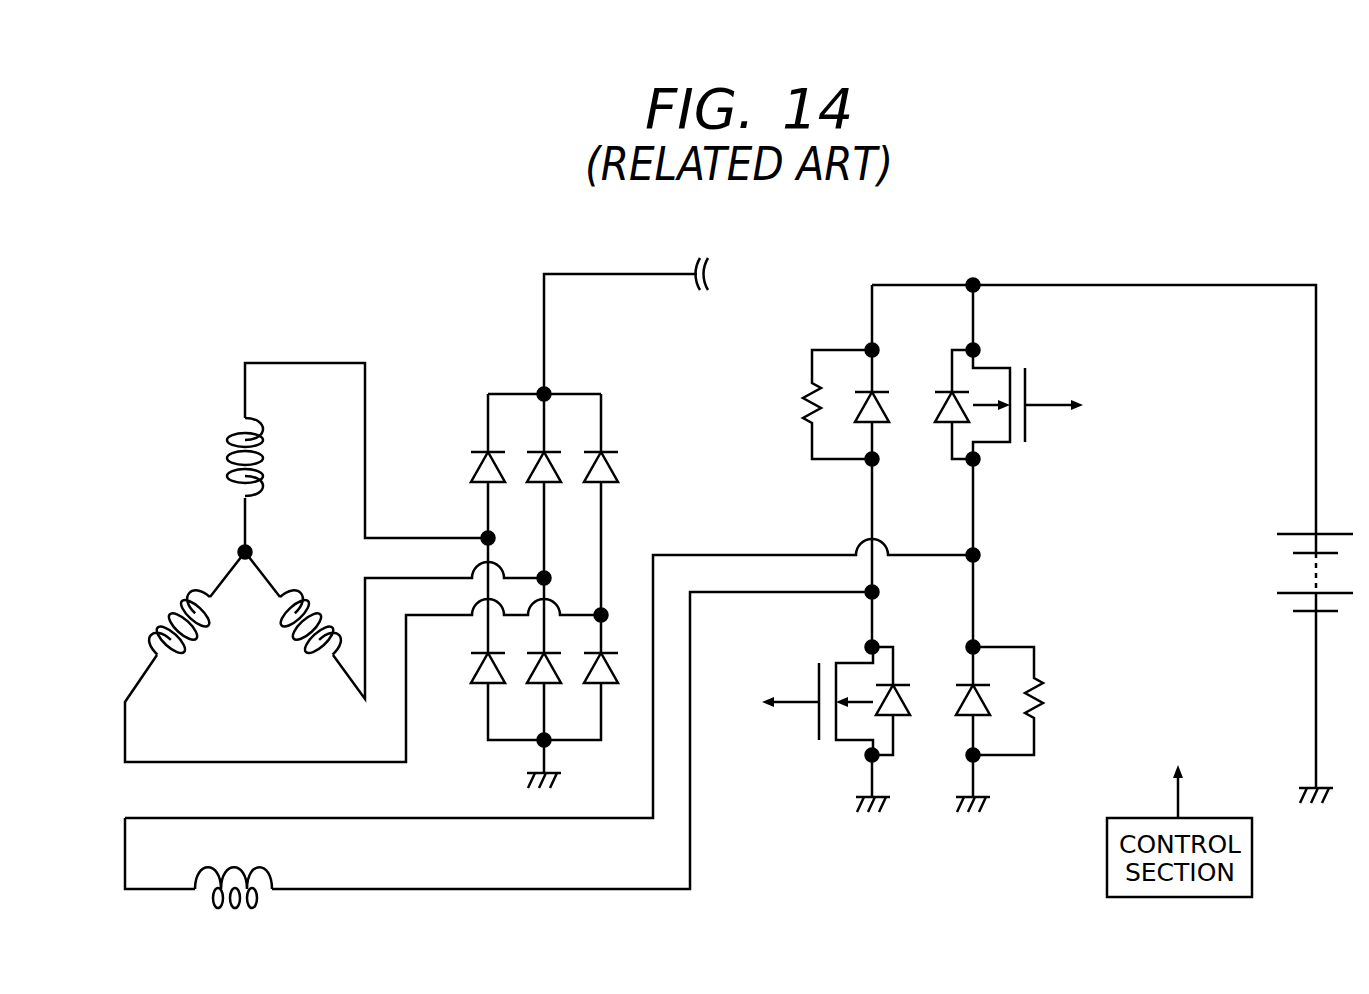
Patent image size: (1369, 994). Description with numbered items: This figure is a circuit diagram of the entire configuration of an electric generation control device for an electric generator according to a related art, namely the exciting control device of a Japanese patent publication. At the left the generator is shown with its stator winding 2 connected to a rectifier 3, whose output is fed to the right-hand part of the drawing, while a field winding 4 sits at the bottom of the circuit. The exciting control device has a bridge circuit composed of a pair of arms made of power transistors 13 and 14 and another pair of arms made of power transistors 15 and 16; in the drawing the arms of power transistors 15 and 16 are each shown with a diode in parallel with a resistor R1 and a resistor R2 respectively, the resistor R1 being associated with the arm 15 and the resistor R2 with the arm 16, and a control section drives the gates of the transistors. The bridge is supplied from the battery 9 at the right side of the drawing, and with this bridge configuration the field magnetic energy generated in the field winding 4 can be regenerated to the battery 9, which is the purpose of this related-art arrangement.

The armature winding (stator coil) 2 is at (207, 416).
The rectifier 3 is at (498, 366).
The field winding 4 is at (268, 863).
The battery 9 is at (1293, 534).
The power transistor 13 is at (993, 368).
The power transistor 14 is at (853, 663).
The power transistor 15 is at (826, 380).
The power transistor 16 is at (1019, 675).
The resistor R1 is at (817, 404).
The resistor R2 is at (1028, 701).